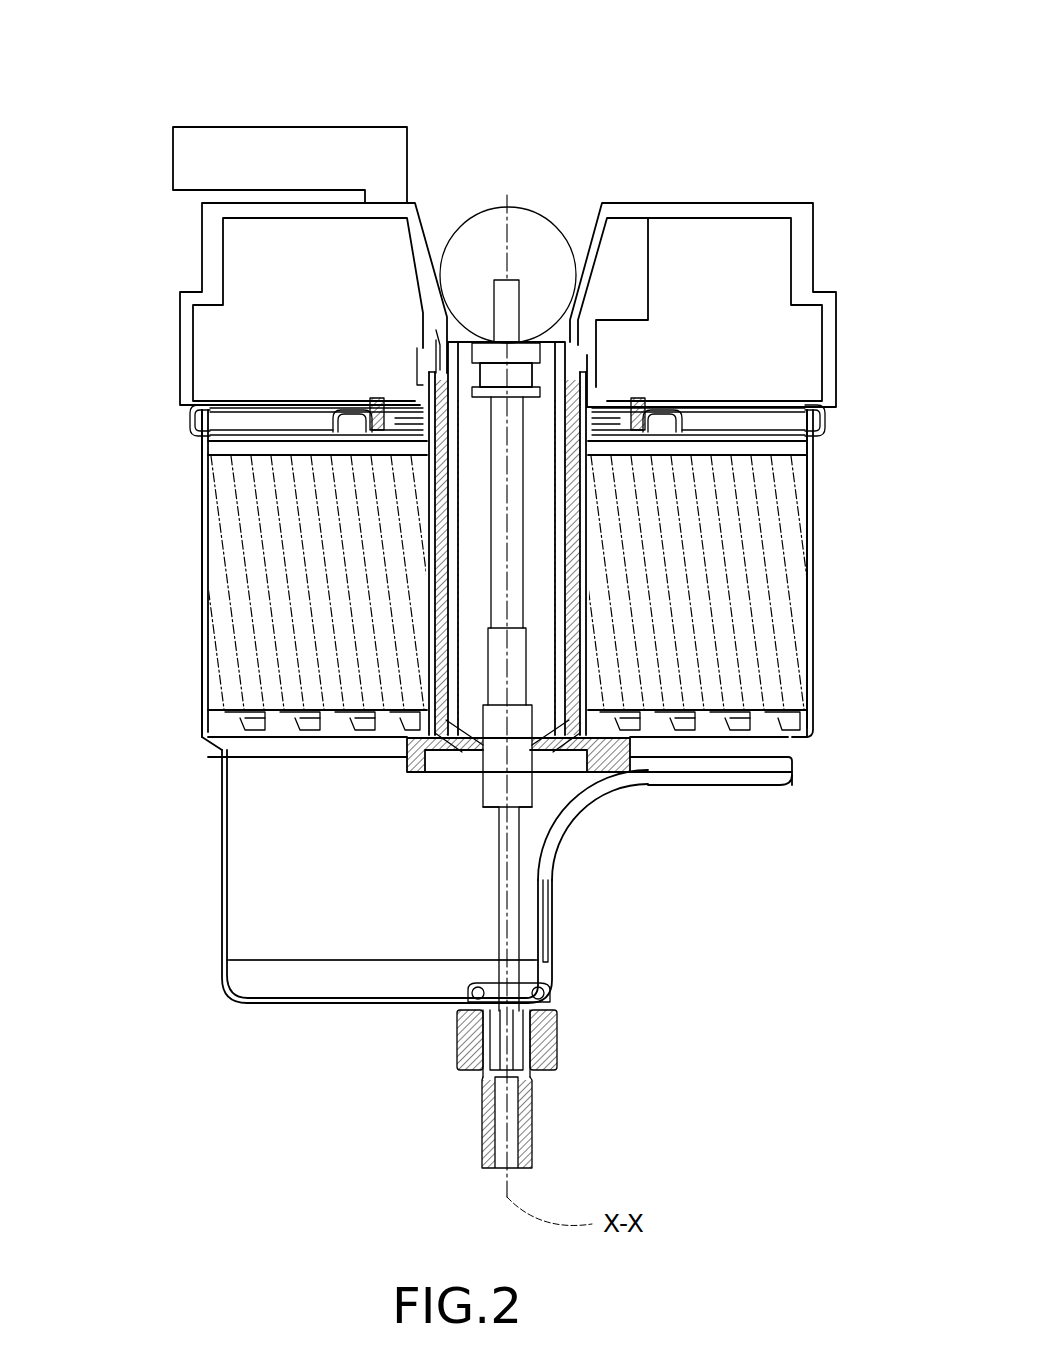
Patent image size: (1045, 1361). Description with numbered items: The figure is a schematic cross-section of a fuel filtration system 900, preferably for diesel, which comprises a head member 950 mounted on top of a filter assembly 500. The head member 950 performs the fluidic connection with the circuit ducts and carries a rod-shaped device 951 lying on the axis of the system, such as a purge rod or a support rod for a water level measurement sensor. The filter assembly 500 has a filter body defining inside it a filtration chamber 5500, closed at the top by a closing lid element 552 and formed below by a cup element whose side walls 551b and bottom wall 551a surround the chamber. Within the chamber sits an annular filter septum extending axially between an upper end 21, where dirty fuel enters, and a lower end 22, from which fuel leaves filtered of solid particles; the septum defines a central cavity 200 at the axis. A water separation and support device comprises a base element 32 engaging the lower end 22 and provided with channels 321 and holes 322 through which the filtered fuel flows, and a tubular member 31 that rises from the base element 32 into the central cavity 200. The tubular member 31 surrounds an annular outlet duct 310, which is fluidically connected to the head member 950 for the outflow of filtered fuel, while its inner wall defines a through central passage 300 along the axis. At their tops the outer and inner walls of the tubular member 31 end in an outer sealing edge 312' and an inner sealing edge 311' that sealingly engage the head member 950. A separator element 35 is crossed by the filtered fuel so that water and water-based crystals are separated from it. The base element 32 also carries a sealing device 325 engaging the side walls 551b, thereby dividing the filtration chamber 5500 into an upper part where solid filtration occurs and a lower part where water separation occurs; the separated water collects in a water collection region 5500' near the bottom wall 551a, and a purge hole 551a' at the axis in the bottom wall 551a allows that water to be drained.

The fuel filtration system 900 is at (150, 78).
The tubular member 31 is at (418, 347).
The inner sealing edge 311' is at (399, 228).
The outer sealing edge 312' is at (260, 318).
The head member 950 is at (738, 245).
The rod-shaped device 951 is at (495, 375).
The through central passage 300 is at (544, 378).
The outlet duct 310 is at (572, 372).
The separator element 35 is at (542, 668).
The central cavity 200 is at (655, 402).
The filtration chamber 5500 is at (146, 381).
The closing lid element 552 is at (648, 402).
The filter assembly 500 is at (136, 523).
The upper end 21 is at (812, 447).
The lower end 22 is at (772, 712).
The holes 322 is at (738, 728).
The channels 321 is at (708, 730).
The sealing device 325 is at (212, 737).
The base element 32 is at (793, 772).
The side walls 551b is at (224, 836).
The water collection region 5500' is at (295, 911).
The bottom wall 551a is at (365, 1069).
The purge hole 551a' is at (423, 1097).